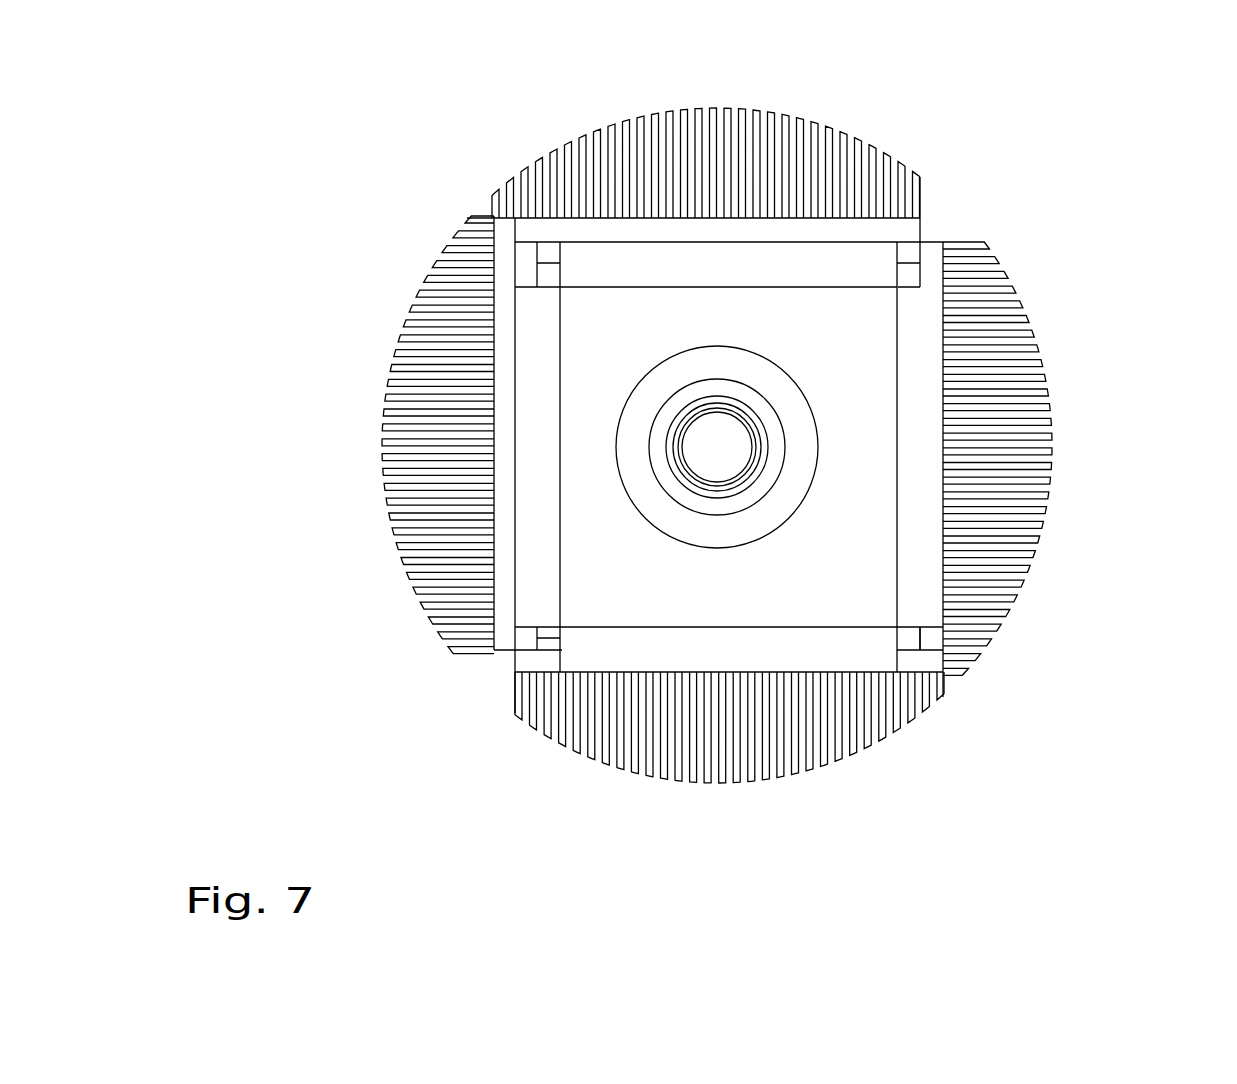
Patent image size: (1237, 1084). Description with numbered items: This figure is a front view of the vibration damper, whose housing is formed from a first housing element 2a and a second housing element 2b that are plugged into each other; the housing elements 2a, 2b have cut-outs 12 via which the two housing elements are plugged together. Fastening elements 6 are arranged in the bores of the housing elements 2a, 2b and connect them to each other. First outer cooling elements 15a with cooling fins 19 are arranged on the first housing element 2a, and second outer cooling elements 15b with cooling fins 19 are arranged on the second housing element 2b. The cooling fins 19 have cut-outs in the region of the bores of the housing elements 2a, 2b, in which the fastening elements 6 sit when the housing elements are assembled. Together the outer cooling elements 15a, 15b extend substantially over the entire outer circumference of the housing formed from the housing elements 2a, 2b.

The first inner cooling elements 15a is at (433, 277).
The second inner cooling elements 15b is at (852, 743).
The cooling fins 19 is at (516, 712).
The cut-outs 12 is at (515, 638).
The first housing element 2a is at (500, 442).
The second housing element 2b is at (528, 508).
The fastening elements 6 is at (944, 428).